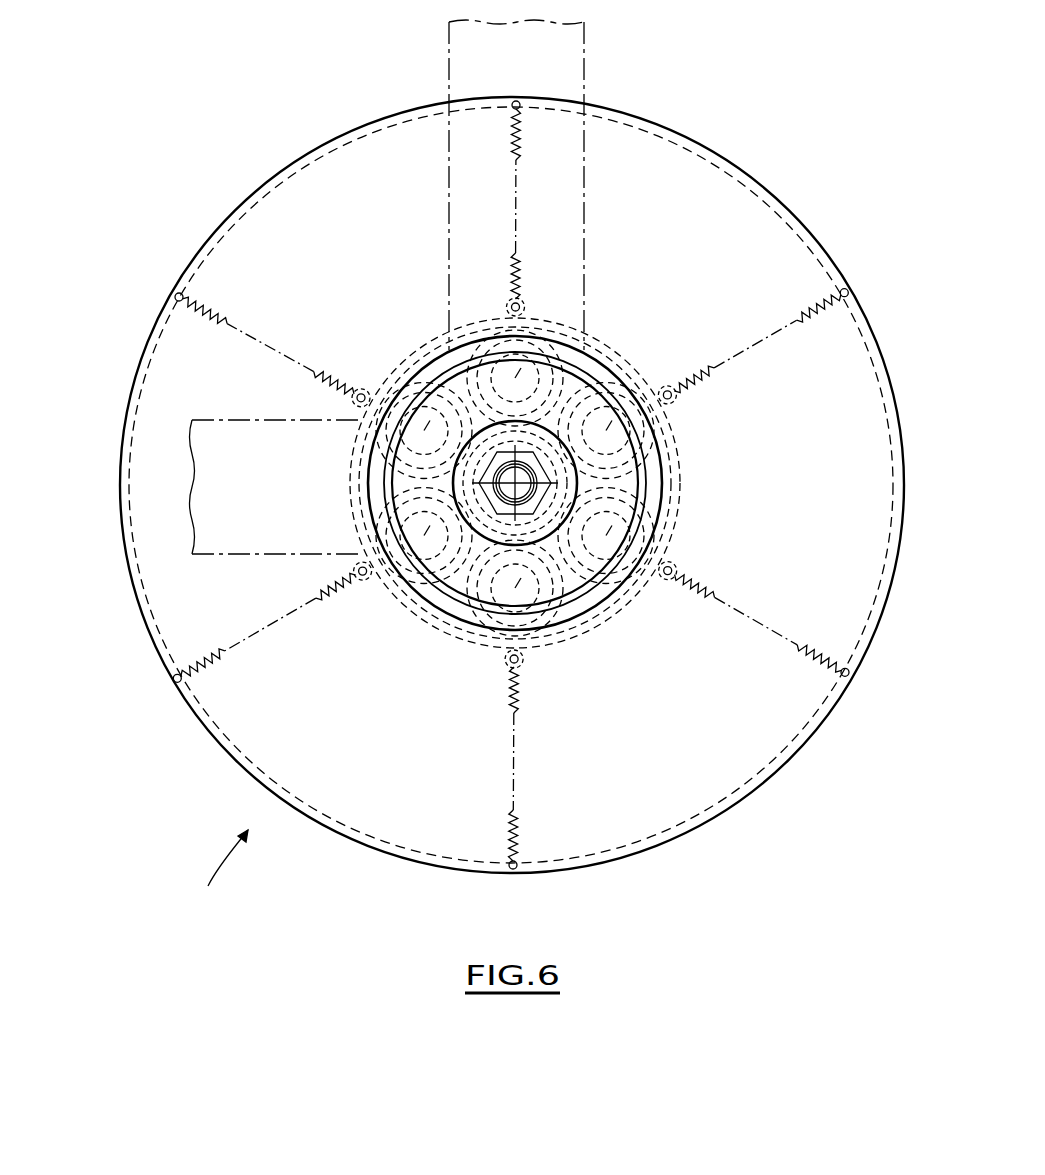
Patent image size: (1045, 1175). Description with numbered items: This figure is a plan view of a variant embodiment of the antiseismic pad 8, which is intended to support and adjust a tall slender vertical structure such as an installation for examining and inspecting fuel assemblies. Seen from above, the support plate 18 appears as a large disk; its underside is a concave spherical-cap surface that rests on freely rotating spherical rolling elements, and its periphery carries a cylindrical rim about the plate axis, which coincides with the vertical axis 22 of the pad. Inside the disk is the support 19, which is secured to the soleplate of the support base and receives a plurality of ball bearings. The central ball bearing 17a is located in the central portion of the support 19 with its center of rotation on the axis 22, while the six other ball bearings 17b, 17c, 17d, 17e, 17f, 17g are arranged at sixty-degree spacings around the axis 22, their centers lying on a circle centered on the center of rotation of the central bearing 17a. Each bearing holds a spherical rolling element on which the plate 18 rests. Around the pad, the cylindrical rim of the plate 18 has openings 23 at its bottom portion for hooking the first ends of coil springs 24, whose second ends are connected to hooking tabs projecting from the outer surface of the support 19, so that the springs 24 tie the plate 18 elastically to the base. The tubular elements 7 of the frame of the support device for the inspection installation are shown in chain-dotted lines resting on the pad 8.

The tubular element 7 is at (576, 64).
The antiseismic pad 8 is at (221, 876).
The ball bearing 17a is at (651, 478).
The ball bearing 17b is at (623, 598).
The ball bearing 17c is at (642, 432).
The ball bearing 17d is at (525, 366).
The ball bearing 17e is at (431, 388).
The ball bearing 17f is at (396, 498).
The ball bearing 17g is at (464, 616).
The support plate 18 is at (673, 793).
The support 19 is at (586, 628).
The vertical axis 22 is at (517, 481).
The opening 23 is at (175, 296).
The coil spring 24 is at (218, 302).